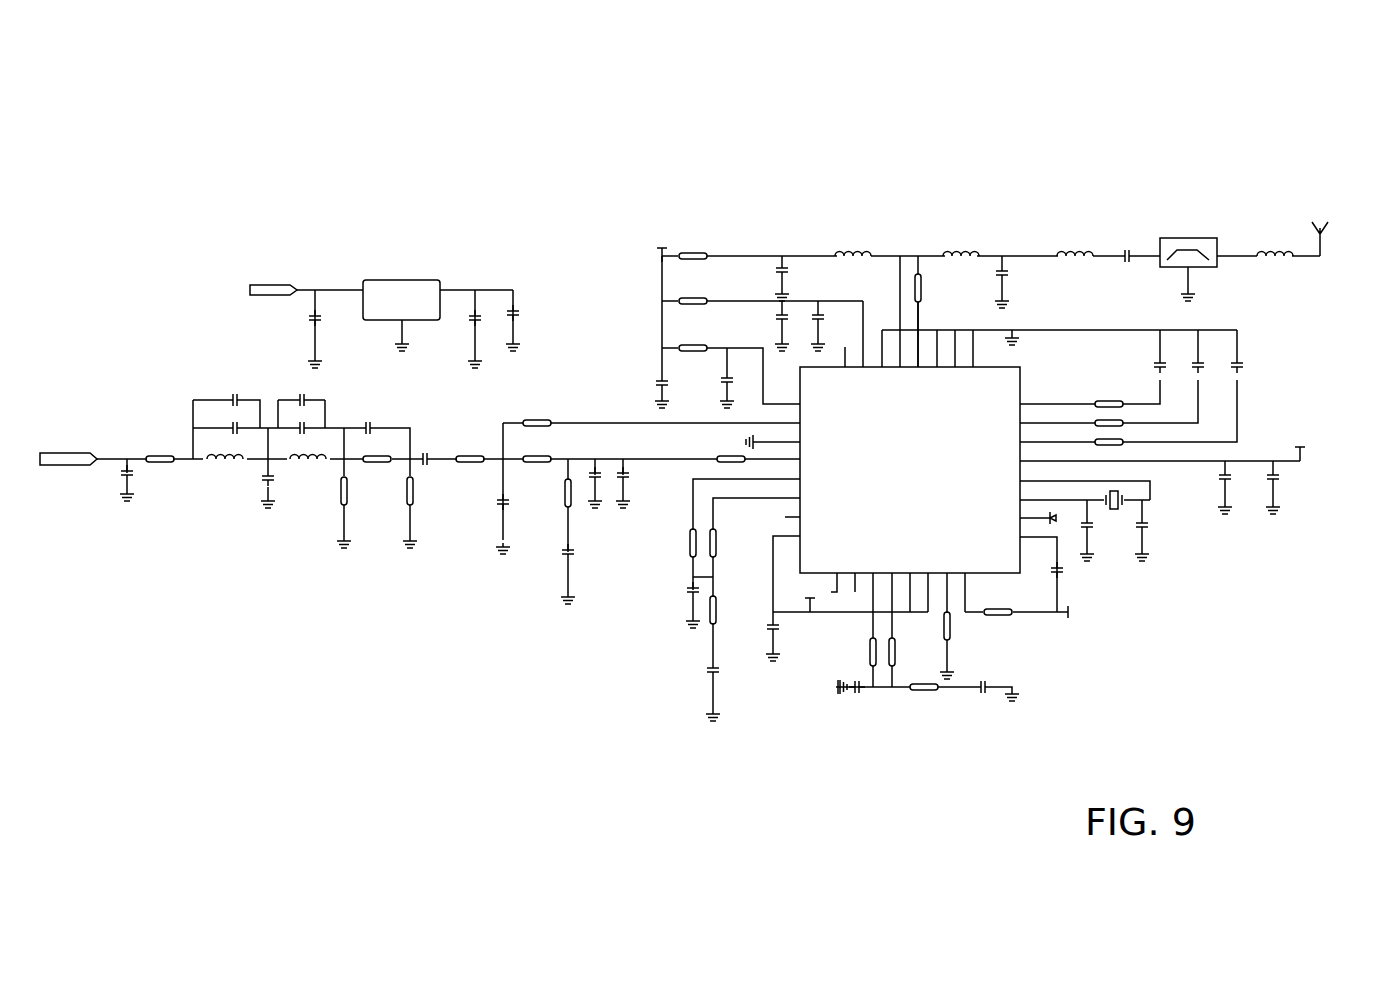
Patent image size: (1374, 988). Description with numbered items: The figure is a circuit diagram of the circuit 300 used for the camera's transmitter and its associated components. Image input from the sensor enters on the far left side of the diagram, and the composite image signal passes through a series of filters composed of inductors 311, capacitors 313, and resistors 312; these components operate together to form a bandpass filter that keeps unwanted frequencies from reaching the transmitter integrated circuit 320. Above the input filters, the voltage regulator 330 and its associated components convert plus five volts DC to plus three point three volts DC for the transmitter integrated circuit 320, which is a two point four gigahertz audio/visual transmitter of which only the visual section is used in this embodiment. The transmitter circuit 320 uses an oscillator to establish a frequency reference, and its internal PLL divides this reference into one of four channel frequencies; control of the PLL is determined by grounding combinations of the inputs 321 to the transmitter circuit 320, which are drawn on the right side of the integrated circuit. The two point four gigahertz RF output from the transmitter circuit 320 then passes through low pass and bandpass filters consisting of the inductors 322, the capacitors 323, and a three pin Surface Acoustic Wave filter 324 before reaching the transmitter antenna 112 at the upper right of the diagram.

The circuit 300 is at (504, 733).
The voltage regulator 330 is at (393, 280).
The inductors 311 is at (323, 467).
The resistors 312 is at (165, 453).
The capacitors 313 is at (235, 400).
The transmitter integrated circuit 320 is at (1017, 378).
The inputs 321 is at (1020, 404).
The inductors 322 is at (1282, 253).
The capacitors 323 is at (1030, 275).
The Surface Acoustic Wave (SAW) filter 324 is at (1213, 267).
The transmitter antenna 112 is at (1315, 205).